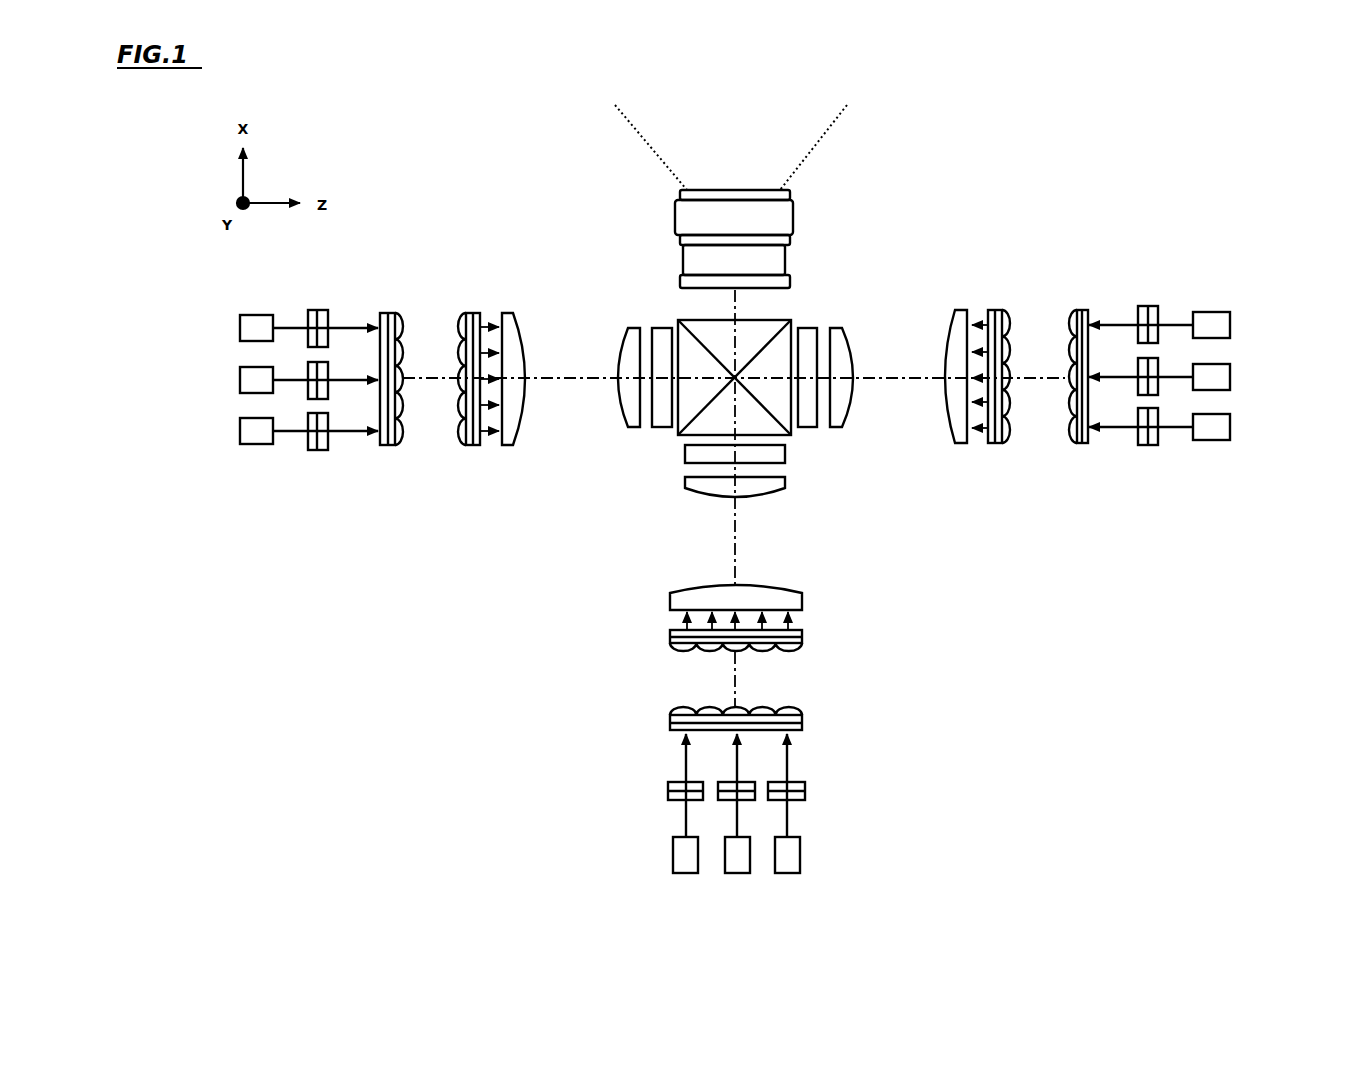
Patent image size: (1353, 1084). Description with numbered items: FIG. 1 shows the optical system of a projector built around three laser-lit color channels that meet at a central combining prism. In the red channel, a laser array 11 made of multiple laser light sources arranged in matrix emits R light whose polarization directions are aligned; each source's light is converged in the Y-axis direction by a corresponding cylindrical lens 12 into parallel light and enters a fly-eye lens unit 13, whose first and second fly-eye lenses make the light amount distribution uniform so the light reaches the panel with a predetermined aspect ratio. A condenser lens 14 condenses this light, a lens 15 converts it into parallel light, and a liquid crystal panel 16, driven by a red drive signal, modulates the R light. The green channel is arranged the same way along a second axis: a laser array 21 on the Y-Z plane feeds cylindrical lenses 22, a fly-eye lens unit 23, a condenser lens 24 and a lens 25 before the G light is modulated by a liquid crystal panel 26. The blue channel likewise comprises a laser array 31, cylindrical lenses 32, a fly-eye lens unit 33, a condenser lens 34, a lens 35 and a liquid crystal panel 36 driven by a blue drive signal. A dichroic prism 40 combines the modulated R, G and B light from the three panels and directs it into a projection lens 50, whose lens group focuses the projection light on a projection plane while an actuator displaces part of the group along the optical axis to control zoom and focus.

The laser array 11 is at (228, 318).
The cylindrical lens 12 is at (350, 287).
The fly-eye lens unit 13 is at (380, 287).
The condenser lens 14 is at (513, 447).
The lens 15 is at (630, 405).
The liquid crystal panel 16 is at (668, 432).
The laser array 21 is at (673, 886).
The cylindrical lens 22 is at (656, 758).
The fly-eye lens unit 23 is at (655, 630).
The condenser lens 24 is at (777, 595).
The lens 25 is at (695, 490).
The liquid crystal panel 26 is at (788, 457).
The laser array 31 is at (1242, 312).
The cylindrical lens 32 is at (1112, 287).
The fly-eye lens unit 33 is at (988, 287).
The condenser lens 34 is at (962, 445).
The lens 35 is at (833, 323).
The liquid crystal panel 36 is at (805, 323).
The dichroic prism 40 is at (700, 330).
The projection lens 50 is at (777, 227).